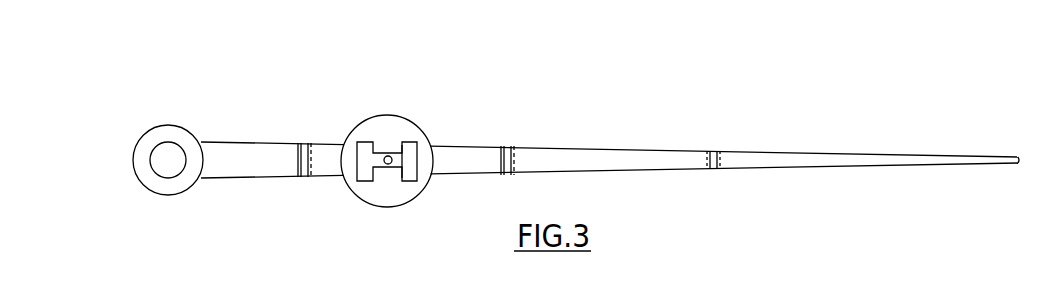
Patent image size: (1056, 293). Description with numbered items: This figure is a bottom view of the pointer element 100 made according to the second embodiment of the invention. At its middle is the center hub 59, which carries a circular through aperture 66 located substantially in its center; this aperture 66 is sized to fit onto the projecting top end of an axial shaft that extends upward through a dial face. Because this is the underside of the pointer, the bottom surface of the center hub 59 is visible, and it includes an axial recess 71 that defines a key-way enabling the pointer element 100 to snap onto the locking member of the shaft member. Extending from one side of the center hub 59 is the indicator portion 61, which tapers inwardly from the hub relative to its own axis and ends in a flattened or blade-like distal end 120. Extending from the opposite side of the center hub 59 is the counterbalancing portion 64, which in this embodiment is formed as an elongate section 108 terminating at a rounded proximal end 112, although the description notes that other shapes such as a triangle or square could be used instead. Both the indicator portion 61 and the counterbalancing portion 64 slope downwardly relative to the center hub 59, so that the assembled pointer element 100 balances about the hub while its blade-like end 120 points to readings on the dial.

The pointer element 100 is at (146, 90).
The rounded proximal end 112 is at (134, 159).
The counterbalancing portion 64 is at (218, 179).
The elongate section 108 is at (282, 143).
The center hub 59 is at (391, 116).
The circular through aperture 66 is at (383, 159).
The axial recess 71 is at (408, 170).
The indicator portion 61 is at (534, 144).
The blade-like distal end 120 is at (836, 169).